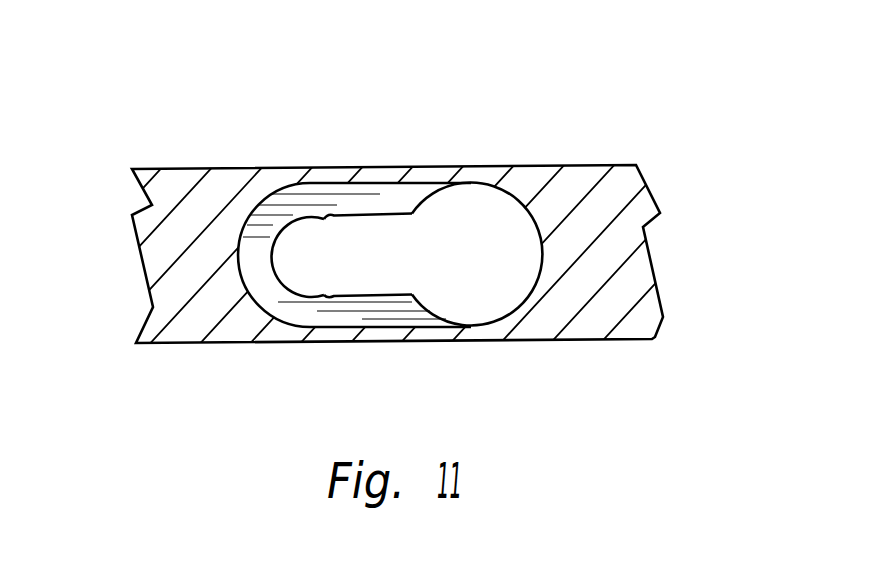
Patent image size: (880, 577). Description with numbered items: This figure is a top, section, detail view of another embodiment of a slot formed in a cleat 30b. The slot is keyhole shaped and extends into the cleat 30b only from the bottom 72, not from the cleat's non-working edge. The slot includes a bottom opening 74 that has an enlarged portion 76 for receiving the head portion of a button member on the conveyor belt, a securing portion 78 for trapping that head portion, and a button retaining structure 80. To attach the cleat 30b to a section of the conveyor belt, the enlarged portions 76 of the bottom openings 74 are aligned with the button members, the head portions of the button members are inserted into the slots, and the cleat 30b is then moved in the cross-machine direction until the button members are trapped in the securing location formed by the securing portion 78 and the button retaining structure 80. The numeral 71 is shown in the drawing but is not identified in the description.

The cleat 30b is at (185, 168).
The keyhole slot opening 71 is at (512, 191).
The bottom 72 is at (620, 282).
The bottom opening 74 is at (382, 222).
The enlarged portion 76 is at (463, 265).
The securing portion 78 is at (308, 250).
The button retaining structure 80 is at (360, 213).